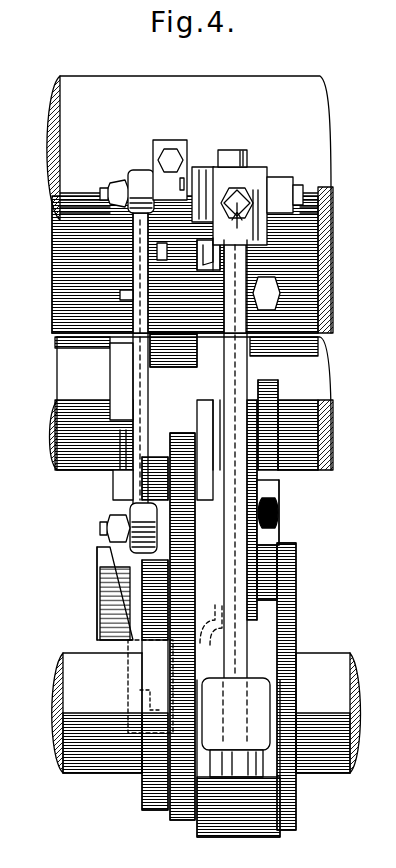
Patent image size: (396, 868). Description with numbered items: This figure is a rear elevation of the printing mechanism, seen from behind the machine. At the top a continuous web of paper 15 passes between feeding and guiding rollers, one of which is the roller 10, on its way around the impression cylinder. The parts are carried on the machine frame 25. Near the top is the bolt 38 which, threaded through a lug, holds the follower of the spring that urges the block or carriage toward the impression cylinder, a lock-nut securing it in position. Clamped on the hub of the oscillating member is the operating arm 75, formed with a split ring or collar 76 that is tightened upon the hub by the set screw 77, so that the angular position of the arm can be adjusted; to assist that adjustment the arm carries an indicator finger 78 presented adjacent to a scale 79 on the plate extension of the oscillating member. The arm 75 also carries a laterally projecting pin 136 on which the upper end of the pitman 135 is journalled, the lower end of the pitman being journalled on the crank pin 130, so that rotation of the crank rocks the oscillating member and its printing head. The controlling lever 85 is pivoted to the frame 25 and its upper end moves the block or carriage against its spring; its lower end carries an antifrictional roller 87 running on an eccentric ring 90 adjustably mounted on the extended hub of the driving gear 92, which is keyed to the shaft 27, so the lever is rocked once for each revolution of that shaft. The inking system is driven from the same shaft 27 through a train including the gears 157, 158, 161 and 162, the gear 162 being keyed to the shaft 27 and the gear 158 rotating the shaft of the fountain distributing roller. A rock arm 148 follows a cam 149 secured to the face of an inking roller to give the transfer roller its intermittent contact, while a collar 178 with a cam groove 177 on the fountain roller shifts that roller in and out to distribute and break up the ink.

The continuous web of paper 15 is at (320, 105).
The feeding and guiding roller 10 is at (325, 375).
The shaft 27 is at (72, 660).
The frame 25 is at (247, 348).
The bolt 38 is at (258, 197).
The operating arm 75 is at (162, 182).
The split ring or collar 76 is at (156, 150).
The set screw 77 is at (169, 152).
The indicator finger 78 is at (183, 178).
The scale 79 is at (196, 172).
The controlling lever 85 is at (213, 245).
The antifrictional roller 87 is at (128, 703).
The eccentric ring 90 is at (157, 805).
The driving gear 92 is at (185, 800).
The crank pin 130 is at (106, 528).
The pitman 135 is at (132, 370).
The pin 136 is at (112, 194).
The rock arm 148 is at (125, 493).
The cam 149 is at (127, 447).
The gear 157 is at (283, 513).
The gear 158 is at (297, 555).
The gear 161 is at (293, 573).
The gear 162 is at (297, 697).
The cam groove 177 is at (113, 572).
The collar 178 is at (100, 587).